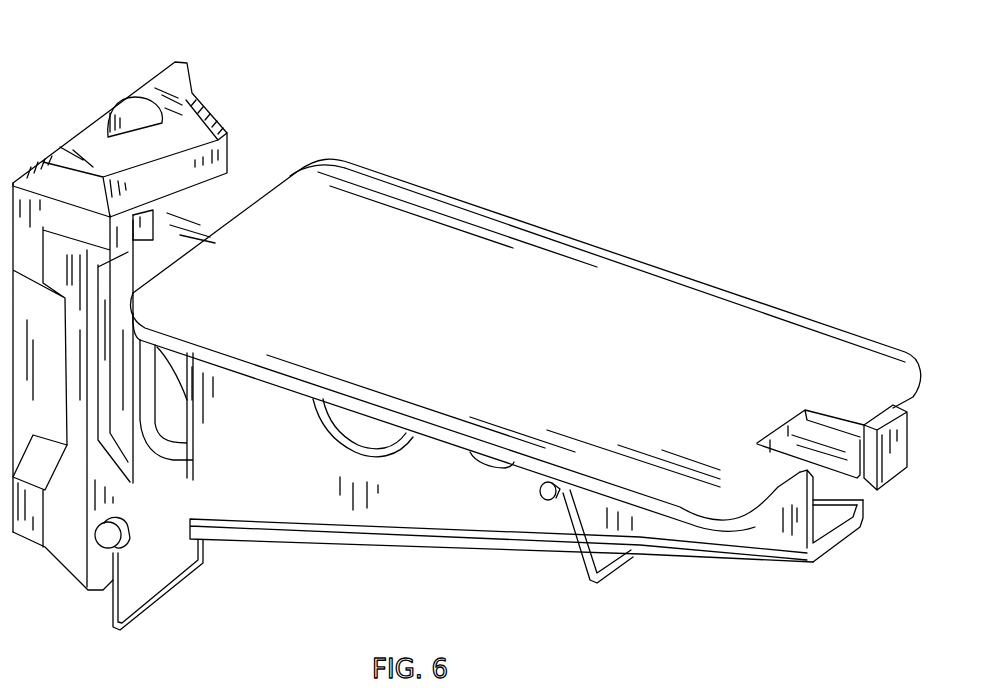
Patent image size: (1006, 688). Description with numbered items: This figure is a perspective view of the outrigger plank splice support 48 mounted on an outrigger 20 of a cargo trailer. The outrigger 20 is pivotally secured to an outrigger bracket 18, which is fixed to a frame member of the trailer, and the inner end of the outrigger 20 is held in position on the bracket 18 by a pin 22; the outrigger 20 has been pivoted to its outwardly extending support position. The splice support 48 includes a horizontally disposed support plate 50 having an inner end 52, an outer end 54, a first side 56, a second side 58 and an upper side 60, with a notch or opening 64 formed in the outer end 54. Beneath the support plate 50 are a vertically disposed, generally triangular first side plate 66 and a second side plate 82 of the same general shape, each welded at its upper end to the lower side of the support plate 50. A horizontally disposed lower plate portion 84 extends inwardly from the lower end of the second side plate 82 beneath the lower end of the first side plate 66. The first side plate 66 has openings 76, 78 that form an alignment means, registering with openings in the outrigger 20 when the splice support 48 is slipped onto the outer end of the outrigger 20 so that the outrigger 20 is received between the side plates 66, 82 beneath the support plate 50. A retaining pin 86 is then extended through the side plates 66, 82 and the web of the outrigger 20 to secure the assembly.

The outrigger bracket 18 is at (222, 94).
The outrigger 20 is at (170, 510).
The pin 22 is at (113, 537).
The outrigger plank splice support 48 is at (638, 229).
The support plate 50 is at (714, 276).
The inner end 52 is at (290, 176).
The outer end 54 is at (943, 385).
The first side 56 is at (437, 432).
The second side 58 is at (740, 293).
The upper side 60 is at (562, 347).
The notch or opening 64 is at (822, 421).
The first side plate 66 is at (313, 489).
The opening 76 is at (328, 441).
The opening 78 is at (487, 465).
The second side plate 82 is at (841, 428).
The lower plate portion 84 is at (840, 535).
The retaining pin 86 is at (548, 495).